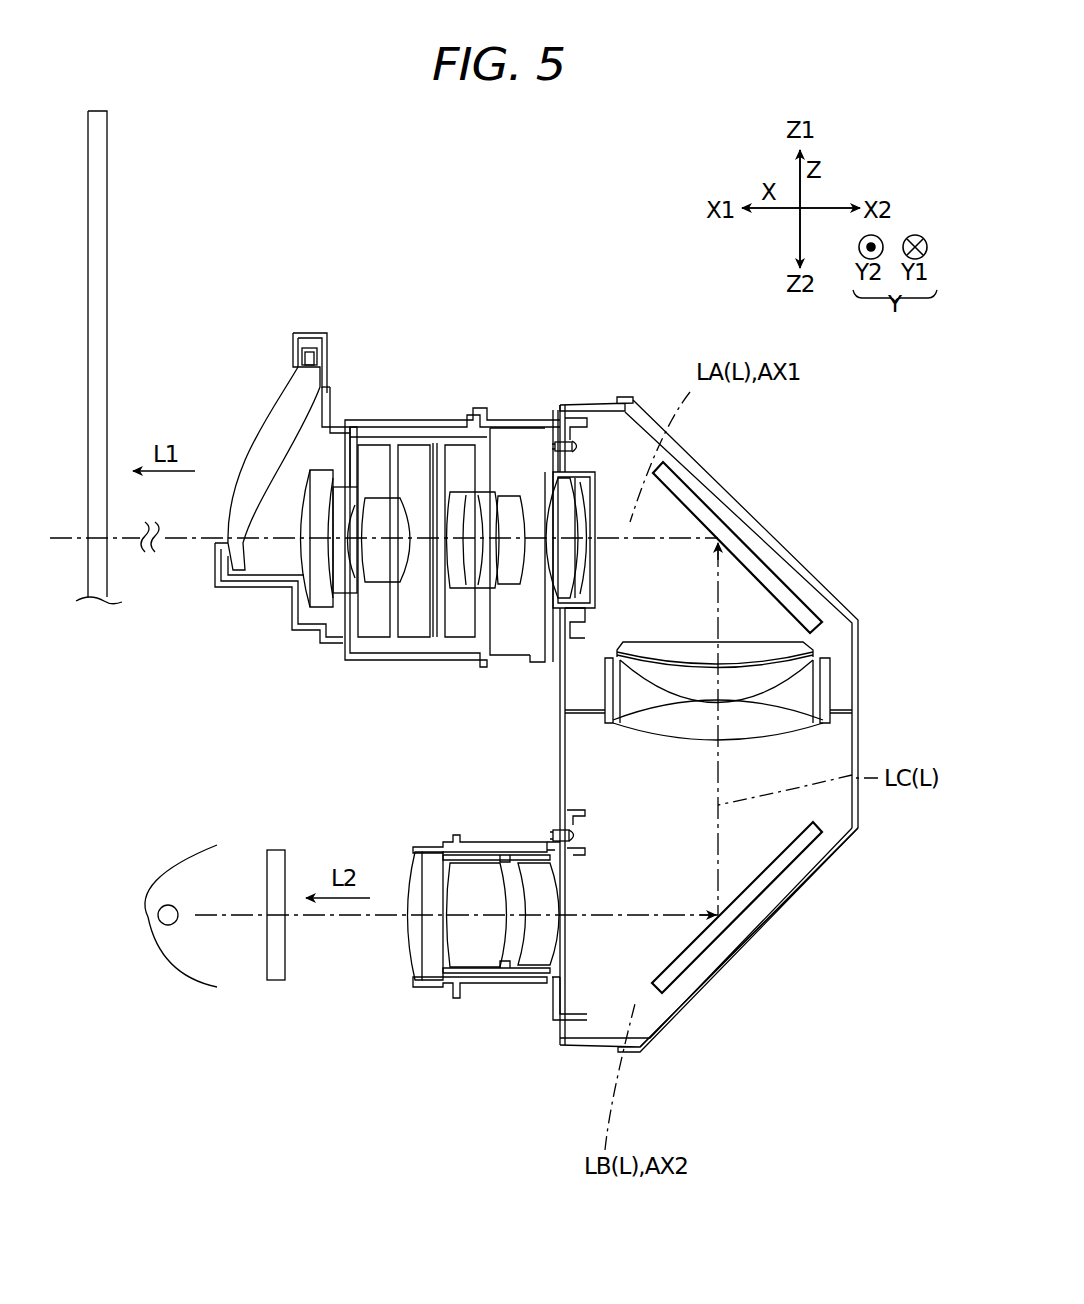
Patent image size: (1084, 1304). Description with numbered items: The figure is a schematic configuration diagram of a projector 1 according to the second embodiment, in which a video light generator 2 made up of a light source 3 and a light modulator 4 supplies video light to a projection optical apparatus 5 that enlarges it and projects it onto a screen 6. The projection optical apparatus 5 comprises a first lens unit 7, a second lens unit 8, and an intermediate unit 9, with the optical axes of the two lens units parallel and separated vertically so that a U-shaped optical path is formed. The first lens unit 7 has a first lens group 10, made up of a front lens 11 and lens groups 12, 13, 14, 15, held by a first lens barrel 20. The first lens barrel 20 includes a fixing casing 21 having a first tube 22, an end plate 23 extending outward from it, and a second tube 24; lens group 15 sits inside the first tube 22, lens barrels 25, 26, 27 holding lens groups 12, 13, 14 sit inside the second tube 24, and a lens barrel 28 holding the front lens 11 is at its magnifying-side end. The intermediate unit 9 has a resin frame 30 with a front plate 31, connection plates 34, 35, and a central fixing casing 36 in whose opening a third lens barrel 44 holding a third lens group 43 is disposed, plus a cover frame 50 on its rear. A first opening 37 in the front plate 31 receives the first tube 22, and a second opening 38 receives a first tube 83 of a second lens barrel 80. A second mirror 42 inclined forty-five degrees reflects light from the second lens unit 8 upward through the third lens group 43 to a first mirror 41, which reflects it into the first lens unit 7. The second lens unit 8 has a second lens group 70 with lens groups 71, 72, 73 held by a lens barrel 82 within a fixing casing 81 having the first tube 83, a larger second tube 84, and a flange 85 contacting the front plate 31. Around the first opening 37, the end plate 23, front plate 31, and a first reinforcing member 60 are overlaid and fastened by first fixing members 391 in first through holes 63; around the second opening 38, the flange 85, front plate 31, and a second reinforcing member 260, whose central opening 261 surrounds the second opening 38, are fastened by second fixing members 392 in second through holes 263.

The projector 1 is at (828, 442).
The video light generator 2 is at (215, 981).
The light source 3 is at (195, 990).
The light modulator 4 is at (274, 970).
The projection optical apparatus 5 is at (172, 664).
The screen 6 is at (113, 200).
The first lens unit 7 is at (288, 638).
The second lens unit 8 is at (417, 832).
The intermediate unit 9 is at (404, 516).
The first lens group 10 is at (500, 272).
The front lens 11 is at (275, 372).
The lens group 12 is at (305, 474).
The lens group 13 is at (411, 494).
The lens group 14 is at (438, 505).
The lens group 15 is at (492, 493).
The first lens barrel 20 is at (475, 680).
The fixing casing 21 is at (510, 665).
The first tube 22 is at (582, 472).
The end plate 23 is at (545, 505).
The second tube 24 is at (555, 441).
The lens barrel 25 is at (455, 640).
The lens barrel 26 is at (412, 640).
The lens barrel 27 is at (370, 640).
The lens barrel 28 is at (340, 415).
The resin frame 30 is at (668, 711).
The front plate 31 is at (560, 790).
The connection plate 34 is at (612, 405).
The connection plate 35 is at (583, 1047).
The fixing casing 36 is at (583, 713).
The first opening 37 is at (570, 638).
The second opening 38 is at (565, 977).
The first mirror 41 is at (755, 553).
The second mirror 42 is at (765, 890).
The third lens group 43 is at (800, 740).
The third lens barrel 44 is at (828, 690).
The cover frame 50 is at (705, 1010).
The first reinforcing member 60 is at (572, 418).
The first through holes 63 is at (553, 446).
The second lens group 70 is at (472, 1068).
The lens group 71 is at (395, 962).
The lens group 72 is at (425, 965).
The lens group 73 is at (530, 962).
The second lens barrel 80 is at (486, 978).
The fixing casing 81 is at (542, 1135).
The lens barrel 82 is at (482, 862).
The first tube 83 is at (545, 980).
The second tube 84 is at (530, 978).
The flange 85 is at (555, 838).
The second reinforcing member 260 is at (585, 812).
The opening 261 is at (582, 846).
The second through holes 263 is at (551, 835).
The first fixing members 391 is at (560, 440).
The second fixing members 392 is at (578, 836).